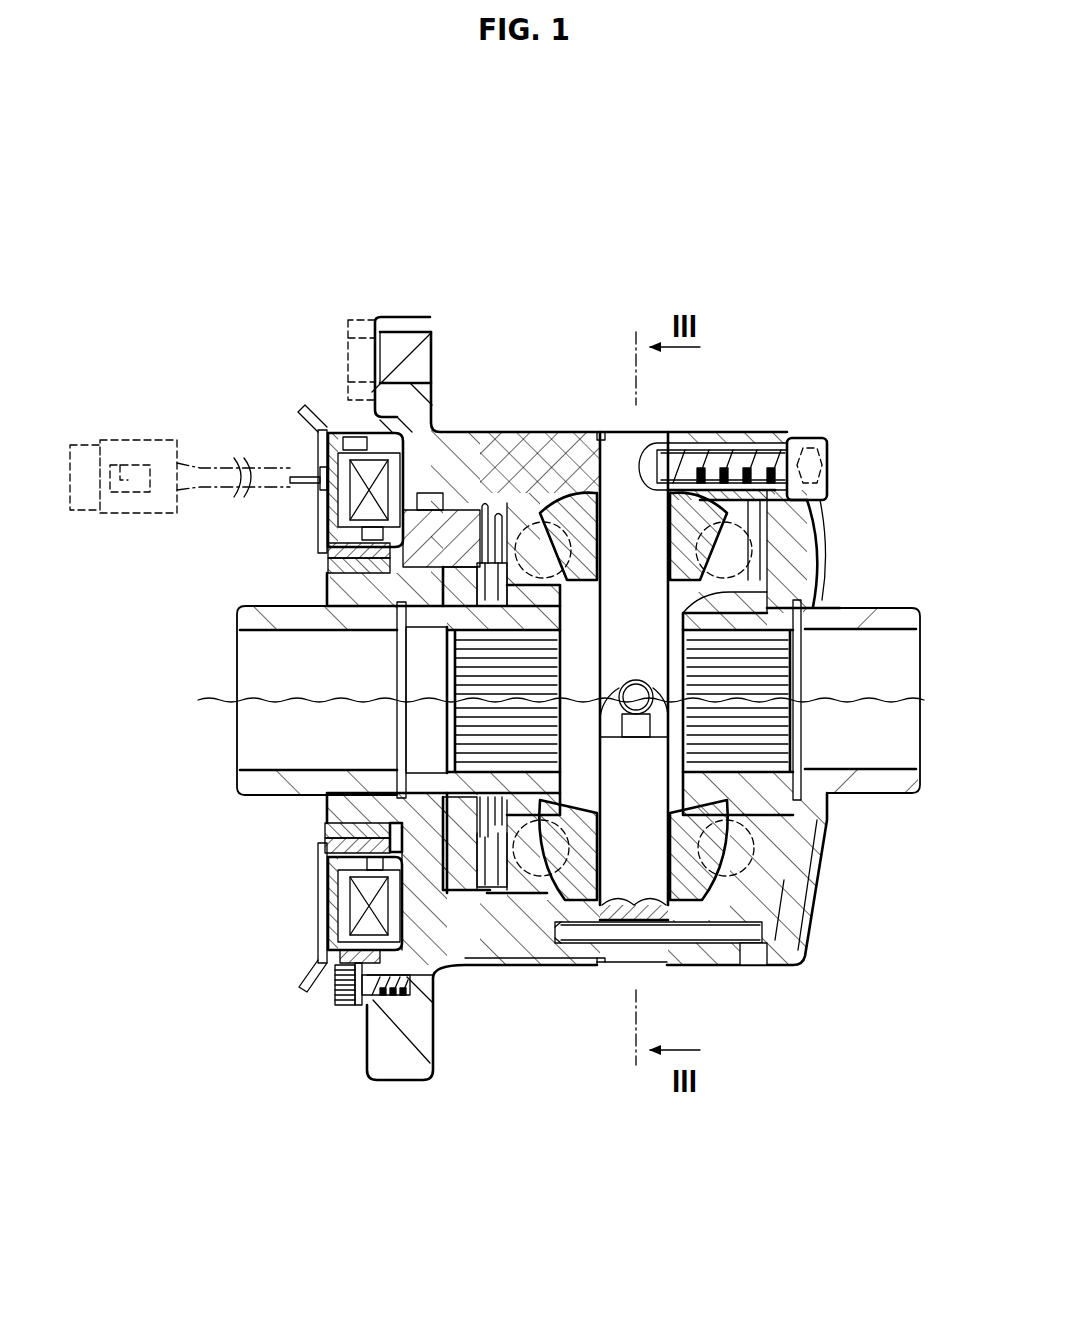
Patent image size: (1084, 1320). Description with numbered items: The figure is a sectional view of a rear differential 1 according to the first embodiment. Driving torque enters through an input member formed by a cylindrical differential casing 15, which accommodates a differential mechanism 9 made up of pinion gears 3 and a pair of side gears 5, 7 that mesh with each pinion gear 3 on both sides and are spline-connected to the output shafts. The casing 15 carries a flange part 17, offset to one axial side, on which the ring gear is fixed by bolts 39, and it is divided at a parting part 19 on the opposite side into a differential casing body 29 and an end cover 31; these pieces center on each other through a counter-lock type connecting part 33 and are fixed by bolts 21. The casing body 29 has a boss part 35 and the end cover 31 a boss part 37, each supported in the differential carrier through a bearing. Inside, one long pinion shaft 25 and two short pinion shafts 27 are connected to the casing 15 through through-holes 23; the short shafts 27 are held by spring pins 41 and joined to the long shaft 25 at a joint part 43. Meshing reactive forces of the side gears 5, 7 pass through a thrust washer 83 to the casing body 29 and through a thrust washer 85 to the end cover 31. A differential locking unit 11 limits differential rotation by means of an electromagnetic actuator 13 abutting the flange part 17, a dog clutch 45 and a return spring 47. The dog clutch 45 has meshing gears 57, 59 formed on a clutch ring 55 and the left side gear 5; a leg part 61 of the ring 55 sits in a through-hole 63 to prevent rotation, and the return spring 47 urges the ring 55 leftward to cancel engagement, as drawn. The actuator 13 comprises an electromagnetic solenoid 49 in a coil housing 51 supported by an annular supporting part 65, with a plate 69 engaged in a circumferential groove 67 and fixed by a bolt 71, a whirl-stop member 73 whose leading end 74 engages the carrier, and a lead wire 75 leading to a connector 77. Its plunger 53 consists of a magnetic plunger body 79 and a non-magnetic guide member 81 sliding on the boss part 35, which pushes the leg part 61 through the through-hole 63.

The rear differential 1 is at (834, 176).
The pinion gear 3 is at (600, 528).
The side gear 5 is at (556, 596).
The side gear 7 is at (727, 595).
The differential mechanism 9 is at (560, 1024).
The differential locking unit 11 is at (255, 362).
The electromagnetic actuator 13 is at (322, 410).
The differential casing 15 is at (782, 353).
The flange part 17 is at (386, 318).
The parting part 19 is at (735, 400).
The bolt 21 is at (814, 437).
The through-hole 23 is at (602, 432).
The long pinion shaft 25 is at (648, 609).
The short pinion shaft 27 is at (648, 826).
The differential casing body 29 is at (503, 977).
The end cover 31 is at (803, 970).
The connecting part 33 is at (755, 967).
The boss part 35 is at (268, 797).
The boss part 37 is at (880, 795).
The bolt 39 is at (352, 318).
The spring pin 41 is at (712, 945).
The joint part 43 is at (662, 710).
The dog clutch 45 is at (500, 452).
The return spring 47 is at (453, 637).
The electromagnetic solenoid 49 is at (408, 955).
The coil housing 51 is at (332, 897).
The plunger 53 is at (289, 553).
The clutch ring 55 is at (458, 495).
The meshing gear 57 is at (535, 500).
The meshing gear 59 is at (568, 480).
The leg part 61 is at (464, 552).
The through-hole 63 is at (435, 488).
The annular supporting part 65 is at (405, 360).
The circumferential groove 67 is at (345, 427).
The plate 69 is at (364, 1003).
The bolt 71 is at (340, 996).
The whirl-stop member 73 is at (310, 948).
The leading end 74 is at (297, 990).
The lead wire 75 is at (212, 462).
The connector 77 is at (120, 440).
The plunger body 79 is at (324, 548).
The guide member 81 is at (340, 565).
The thrust washer 83 is at (400, 632).
The thrust washer 85 is at (765, 615).